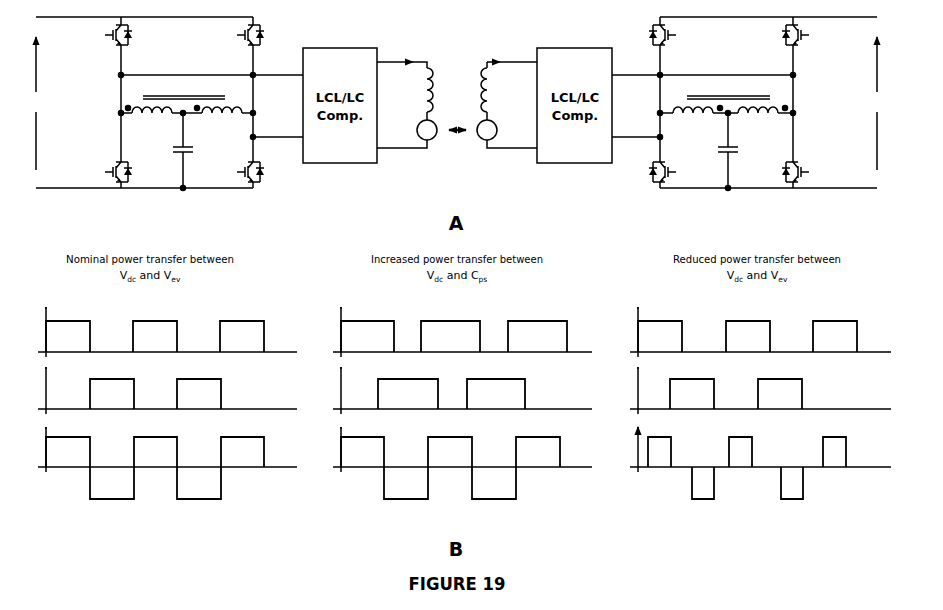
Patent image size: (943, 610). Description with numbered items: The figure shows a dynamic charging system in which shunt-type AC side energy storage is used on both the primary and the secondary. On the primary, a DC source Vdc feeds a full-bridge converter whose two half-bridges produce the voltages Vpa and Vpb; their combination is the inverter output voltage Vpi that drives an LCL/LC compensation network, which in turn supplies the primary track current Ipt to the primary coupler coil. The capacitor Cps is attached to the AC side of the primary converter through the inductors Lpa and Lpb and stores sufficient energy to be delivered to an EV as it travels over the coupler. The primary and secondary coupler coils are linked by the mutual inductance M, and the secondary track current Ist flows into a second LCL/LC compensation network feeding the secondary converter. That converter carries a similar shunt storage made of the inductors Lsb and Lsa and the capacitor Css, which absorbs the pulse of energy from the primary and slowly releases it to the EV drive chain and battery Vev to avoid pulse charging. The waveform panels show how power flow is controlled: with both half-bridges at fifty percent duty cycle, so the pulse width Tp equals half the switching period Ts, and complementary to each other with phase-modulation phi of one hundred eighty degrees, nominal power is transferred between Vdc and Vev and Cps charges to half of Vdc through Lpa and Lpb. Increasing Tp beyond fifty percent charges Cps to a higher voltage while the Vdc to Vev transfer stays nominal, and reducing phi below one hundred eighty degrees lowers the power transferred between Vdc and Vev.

In FIG. 19A, the DC source voltage Vdc is at (36, 103).
In FIG. 19A, the primary inductor a Lpa is at (152, 121).
In FIG. 19A, the primary inductor b Lpb is at (218, 121).
In FIG. 19A, the primary AC side storage capacitor Cps is at (189, 152).
In FIG. 19A, the voltage of primary half-bridge a Vpa is at (143, 146).
In FIG. 19B, the voltage of primary half-bridge a Vpa is at (441, 329).
In FIG. 19A, the voltage of primary half-bridge b Vpb is at (276, 146).
In FIG. 19B, the voltage of primary half-bridge b Vpb is at (413, 387).
In FIG. 19A, the primary inverter output voltage Vpi is at (268, 86).
In FIG. 19B, the primary inverter output voltage Vpi is at (437, 461).
In FIG. 19A, the primary track current Ipt is at (407, 96).
In FIG. 19A, the mutual inductance M is at (457, 120).
In FIG. 19A, the secondary track current Ist is at (507, 96).
In FIG. 19A, the secondary inductor b Lsb is at (694, 122).
In FIG. 19A, the secondary inductor a Lsa is at (760, 122).
In FIG. 19A, the secondary AC side storage capacitor Css is at (719, 152).
In FIG. 19A, the EV battery voltage Vev is at (878, 103).
In FIG. 19B, the pulse width Tp is at (212, 375).
In FIG. 19B, the switching period Ts is at (725, 509).
In FIG. 19B, the phase-modulation phi is at (53, 395).